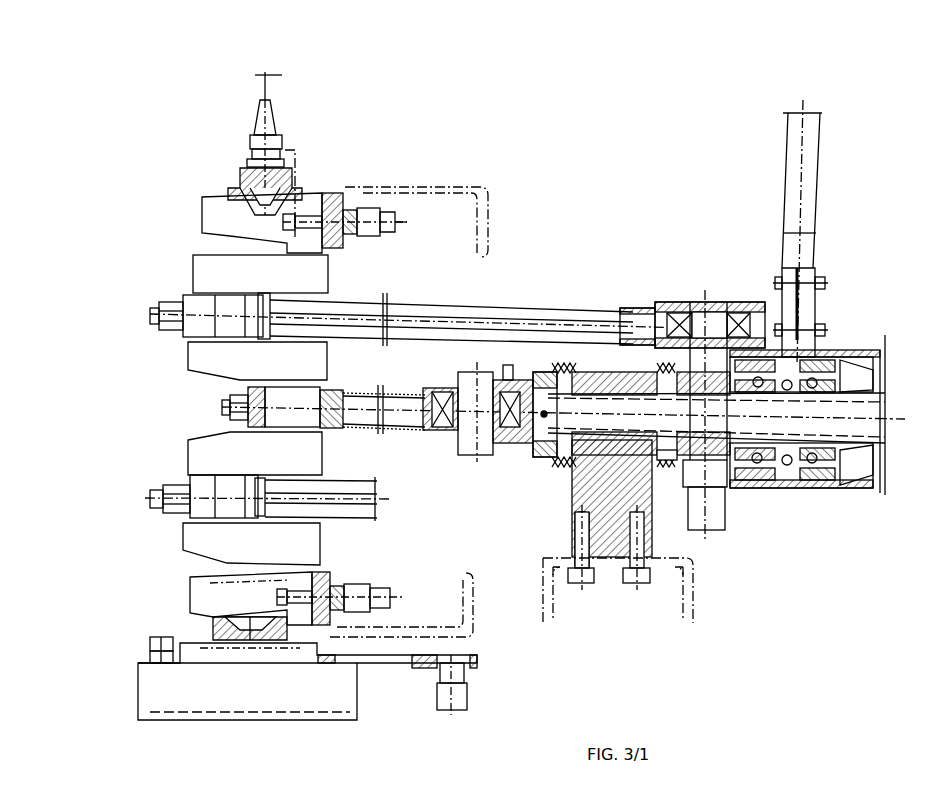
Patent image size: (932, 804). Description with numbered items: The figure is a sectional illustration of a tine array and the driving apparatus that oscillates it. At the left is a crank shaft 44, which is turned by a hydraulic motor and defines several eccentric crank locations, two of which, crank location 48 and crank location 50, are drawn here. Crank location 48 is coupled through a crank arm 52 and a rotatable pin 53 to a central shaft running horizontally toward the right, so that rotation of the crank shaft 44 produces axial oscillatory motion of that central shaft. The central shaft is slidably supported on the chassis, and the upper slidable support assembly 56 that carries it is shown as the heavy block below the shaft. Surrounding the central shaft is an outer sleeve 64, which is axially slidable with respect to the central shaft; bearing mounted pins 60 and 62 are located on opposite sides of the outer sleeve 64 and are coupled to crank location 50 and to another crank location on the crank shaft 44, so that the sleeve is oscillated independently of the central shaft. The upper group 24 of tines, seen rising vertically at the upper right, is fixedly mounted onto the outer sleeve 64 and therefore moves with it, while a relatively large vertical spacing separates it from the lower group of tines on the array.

The upper group of tines 24 is at (847, 188).
The crank shaft 44 is at (223, 363).
The crank location 48 is at (307, 393).
The crank location 50 is at (228, 305).
The crank arm 52 is at (397, 393).
The rotatable pin 53 is at (470, 381).
The upper slidable support assembly 56 is at (548, 472).
The bearing mounted pin 60 is at (712, 525).
The bearing mounted pin 62 is at (716, 322).
The outer sleeve 64 is at (858, 357).